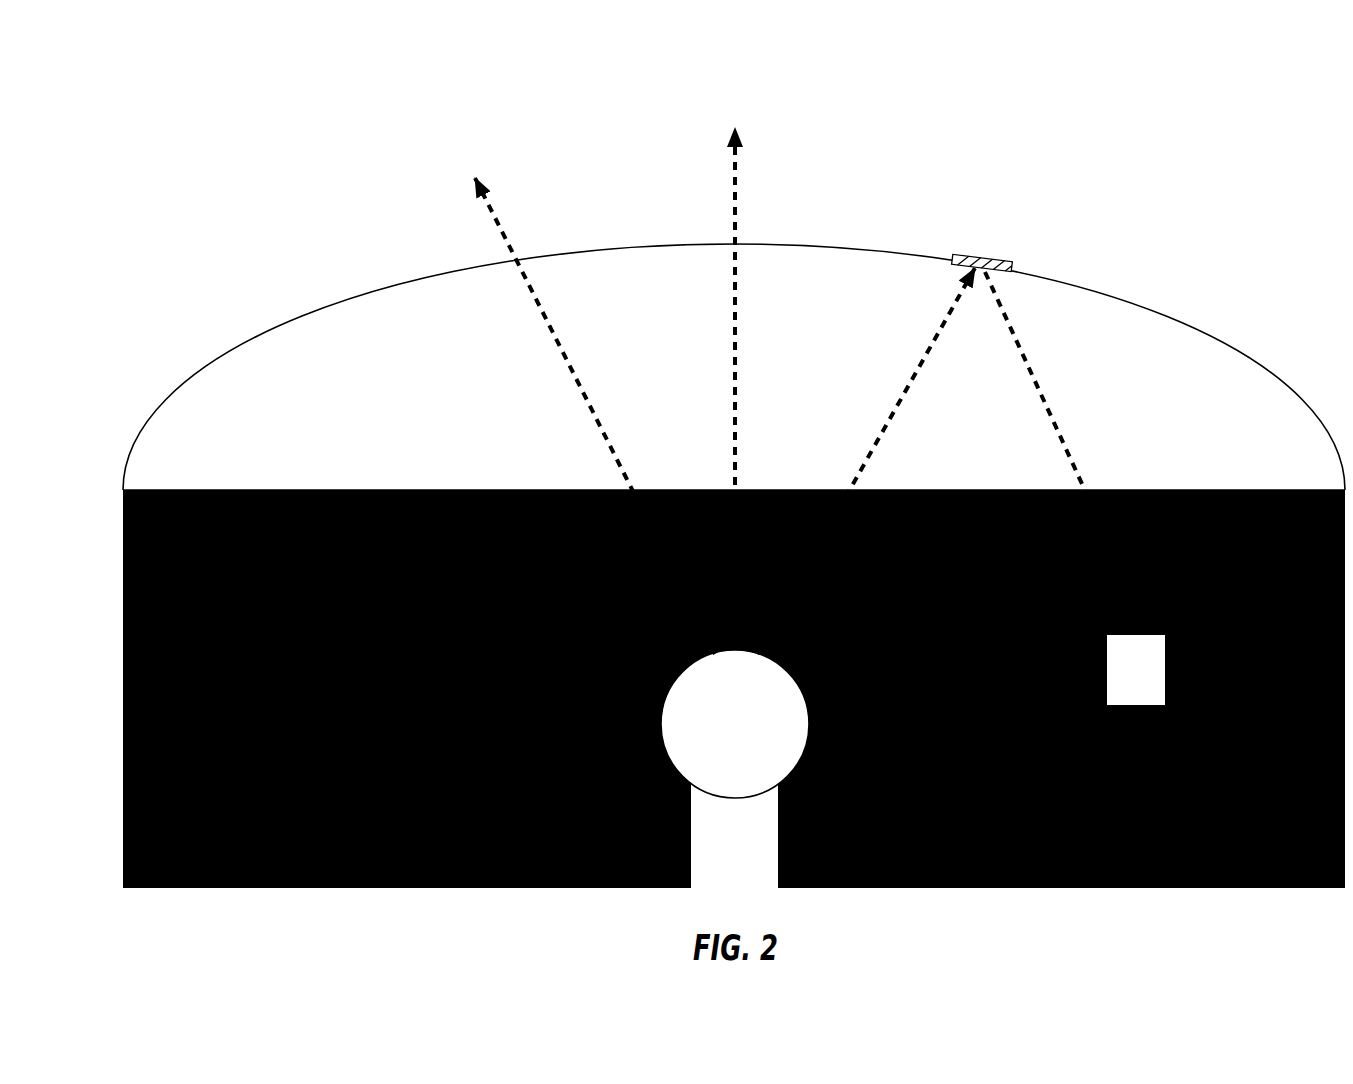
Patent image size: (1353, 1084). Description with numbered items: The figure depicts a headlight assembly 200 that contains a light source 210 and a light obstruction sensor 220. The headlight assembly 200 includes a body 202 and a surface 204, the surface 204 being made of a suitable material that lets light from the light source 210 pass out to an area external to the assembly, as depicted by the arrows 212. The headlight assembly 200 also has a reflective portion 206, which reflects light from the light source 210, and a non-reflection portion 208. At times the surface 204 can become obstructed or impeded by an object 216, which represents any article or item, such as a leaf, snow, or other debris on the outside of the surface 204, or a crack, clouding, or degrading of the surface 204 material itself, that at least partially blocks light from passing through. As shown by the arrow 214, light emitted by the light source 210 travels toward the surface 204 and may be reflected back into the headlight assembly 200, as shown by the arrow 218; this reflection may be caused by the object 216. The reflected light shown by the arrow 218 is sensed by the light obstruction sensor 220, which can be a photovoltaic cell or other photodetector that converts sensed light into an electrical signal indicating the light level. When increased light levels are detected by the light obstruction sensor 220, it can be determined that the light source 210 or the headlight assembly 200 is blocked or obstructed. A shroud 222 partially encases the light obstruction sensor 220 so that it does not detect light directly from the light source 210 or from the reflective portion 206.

The headlight assembly 200 is at (113, 91).
The body 202 is at (123, 680).
The surface 204 is at (337, 307).
The reflective portion 206 is at (318, 587).
The non-reflection portion 208 is at (318, 421).
The light source 210 is at (750, 735).
The arrows 212 is at (500, 218).
The arrow 214 is at (908, 393).
The object 216 is at (978, 257).
The arrow 218 is at (1058, 433).
The light obstruction sensor 220 is at (1153, 680).
The shroud 222 is at (1075, 575).